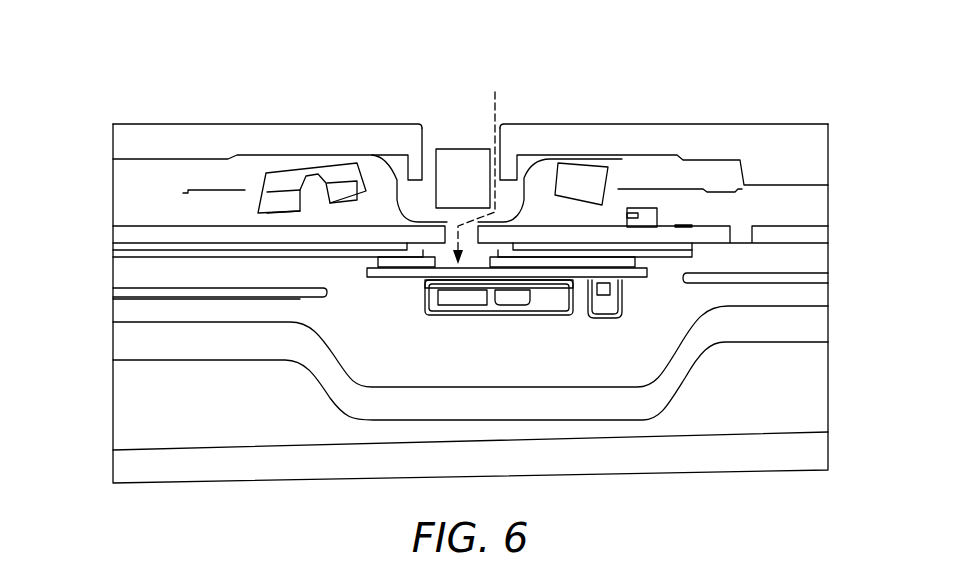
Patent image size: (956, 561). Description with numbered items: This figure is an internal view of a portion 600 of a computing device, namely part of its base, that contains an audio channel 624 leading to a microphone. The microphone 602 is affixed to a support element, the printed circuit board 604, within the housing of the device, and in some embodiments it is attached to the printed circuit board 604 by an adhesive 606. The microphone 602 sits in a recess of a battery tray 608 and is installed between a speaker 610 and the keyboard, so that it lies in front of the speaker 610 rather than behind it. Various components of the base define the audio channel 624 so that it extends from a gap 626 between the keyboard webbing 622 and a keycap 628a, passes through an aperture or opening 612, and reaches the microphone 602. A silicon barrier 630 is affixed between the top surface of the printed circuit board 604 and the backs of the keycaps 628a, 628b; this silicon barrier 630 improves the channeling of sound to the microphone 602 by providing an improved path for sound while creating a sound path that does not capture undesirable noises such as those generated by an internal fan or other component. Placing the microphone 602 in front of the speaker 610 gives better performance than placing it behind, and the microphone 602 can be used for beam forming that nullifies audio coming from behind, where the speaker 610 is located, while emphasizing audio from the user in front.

The portion of a computing device 600 is at (218, 84).
The microphone 602 is at (478, 315).
The printed circuit board 604 is at (828, 237).
The adhesive 606 is at (378, 257).
The battery tray 608 is at (828, 278).
The speaker 610 is at (828, 328).
The aperture or opening 612 is at (453, 223).
The keyboard webbing 622 is at (451, 187).
The audio channel 624 is at (497, 105).
The gap 626 is at (483, 137).
The keycap 628a is at (828, 153).
The keycap 628b is at (113, 140).
The silicon barrier 630 is at (400, 203).